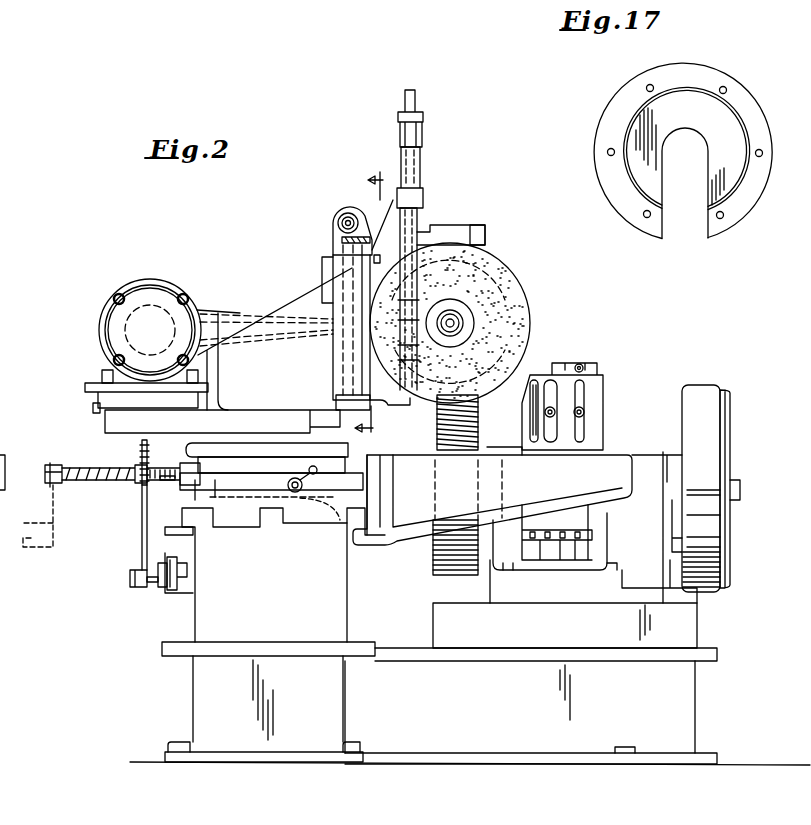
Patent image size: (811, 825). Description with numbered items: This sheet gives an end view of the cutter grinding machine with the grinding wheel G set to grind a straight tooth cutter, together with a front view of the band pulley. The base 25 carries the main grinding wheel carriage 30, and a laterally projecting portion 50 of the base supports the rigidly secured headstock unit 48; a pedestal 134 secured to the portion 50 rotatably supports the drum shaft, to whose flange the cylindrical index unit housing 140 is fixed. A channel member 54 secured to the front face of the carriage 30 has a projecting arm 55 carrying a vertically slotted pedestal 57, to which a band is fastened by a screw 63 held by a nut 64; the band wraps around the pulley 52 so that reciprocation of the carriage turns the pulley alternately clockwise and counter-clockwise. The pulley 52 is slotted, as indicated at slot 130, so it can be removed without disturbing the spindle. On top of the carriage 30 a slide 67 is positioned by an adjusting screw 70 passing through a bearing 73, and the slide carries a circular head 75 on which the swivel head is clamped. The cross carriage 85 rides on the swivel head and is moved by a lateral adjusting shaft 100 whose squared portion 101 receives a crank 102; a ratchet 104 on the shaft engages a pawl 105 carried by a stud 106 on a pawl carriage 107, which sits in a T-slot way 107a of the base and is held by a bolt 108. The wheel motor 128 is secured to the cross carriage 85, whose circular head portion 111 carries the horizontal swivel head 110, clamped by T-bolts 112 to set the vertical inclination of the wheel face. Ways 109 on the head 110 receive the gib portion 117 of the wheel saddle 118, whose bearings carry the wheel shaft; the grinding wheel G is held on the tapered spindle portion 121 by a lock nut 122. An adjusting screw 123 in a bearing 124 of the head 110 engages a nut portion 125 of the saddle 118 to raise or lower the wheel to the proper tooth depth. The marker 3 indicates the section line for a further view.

In FIG. 2, the base 25 is at (190, 698).
In FIG. 2, the main grinding wheel carriage 30 is at (163, 517).
In FIG. 2, the headstock unit 48 is at (736, 566).
In FIG. 2, the laterally projecting portion 50 is at (693, 698).
In FIG. 17, the pulley 52 is at (612, 104).
In FIG. 2, the pulley 52 is at (580, 515).
In FIG. 2, the channel member 54 is at (388, 545).
In FIG. 2, the projecting arm 55 is at (492, 496).
In FIG. 2, the vertically slotted pedestal 57 is at (590, 400).
In FIG. 2, the screw 63 is at (586, 412).
In FIG. 2, the nut 64 is at (600, 405).
In FIG. 2, the slide 67 is at (193, 493).
In FIG. 2, the adjusting screw 70 is at (300, 480).
In FIG. 2, the bearing 73 is at (300, 522).
In FIG. 2, the circular head 75 is at (9, 468).
In FIG. 2, the cross carriage 85 is at (228, 350).
In FIG. 2, the lateral adjusting shaft 100 is at (108, 455).
In FIG. 2, the squared portion 101 is at (62, 462).
In FIG. 2, the crank 102 is at (26, 516).
In FIG. 2, the ratchet 104 is at (142, 446).
In FIG. 2, the pawl 105 is at (142, 525).
In FIG. 2, the stud 106 is at (130, 580).
In FIG. 2, the pawl carriage 107 is at (154, 583).
In FIG. 2, the T-slot way 107a is at (180, 592).
In FIG. 2, the bolt 108 is at (163, 588).
In FIG. 2, the ways 109 is at (418, 220).
In FIG. 2, the horizontal swivel head 110 is at (340, 262).
In FIG. 2, the circular head portion 111 is at (330, 284).
In FIG. 2, the T-bolts 112 is at (338, 376).
In FIG. 2, the gib portion 117 is at (455, 225).
In FIG. 2, the wheel saddle 118 is at (486, 234).
In FIG. 2, the tapered spindle portion 121 is at (475, 323).
In FIG. 2, the lock nut 122 is at (490, 295).
In FIG. 2, the adjusting screw 123 is at (415, 100).
In FIG. 2, the bearing 124 is at (421, 160).
In FIG. 2, the nut portion 125 is at (380, 407).
In FIG. 2, the wheel motor 128 is at (160, 280).
In FIG. 17, the slot 130 is at (702, 232).
In FIG. 2, the pedestal 134 is at (565, 604).
In FIG. 2, the cylindrical index unit housing 140 is at (700, 385).
In FIG. 2, the grinding wheel G is at (525, 300).
In FIG. 2, the section line 3 is at (355, 302).